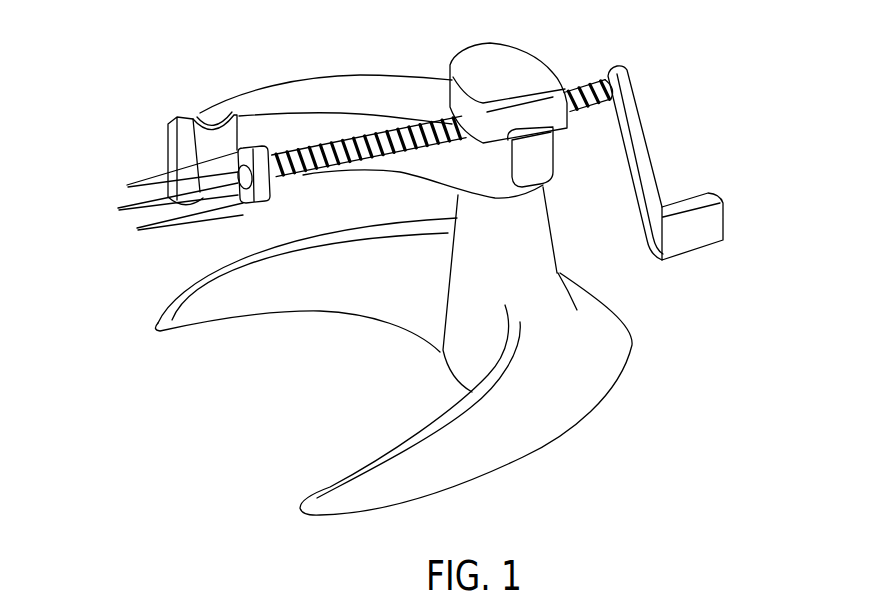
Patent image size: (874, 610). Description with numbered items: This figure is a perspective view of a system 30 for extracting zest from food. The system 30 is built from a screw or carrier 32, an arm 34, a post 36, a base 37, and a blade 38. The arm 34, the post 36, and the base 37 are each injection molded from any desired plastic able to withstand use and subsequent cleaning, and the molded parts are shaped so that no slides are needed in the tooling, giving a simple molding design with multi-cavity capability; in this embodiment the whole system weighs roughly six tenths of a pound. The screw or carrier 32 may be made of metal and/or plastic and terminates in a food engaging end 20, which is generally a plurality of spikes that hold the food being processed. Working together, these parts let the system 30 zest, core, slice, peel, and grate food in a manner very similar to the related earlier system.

The food engaging end 20 is at (145, 227).
The system 30 is at (492, 289).
The screw or carrier 32 is at (303, 175).
The arm 34 is at (357, 93).
The post 36 is at (547, 228).
The base 37 is at (248, 298).
The blade 38 is at (202, 112).